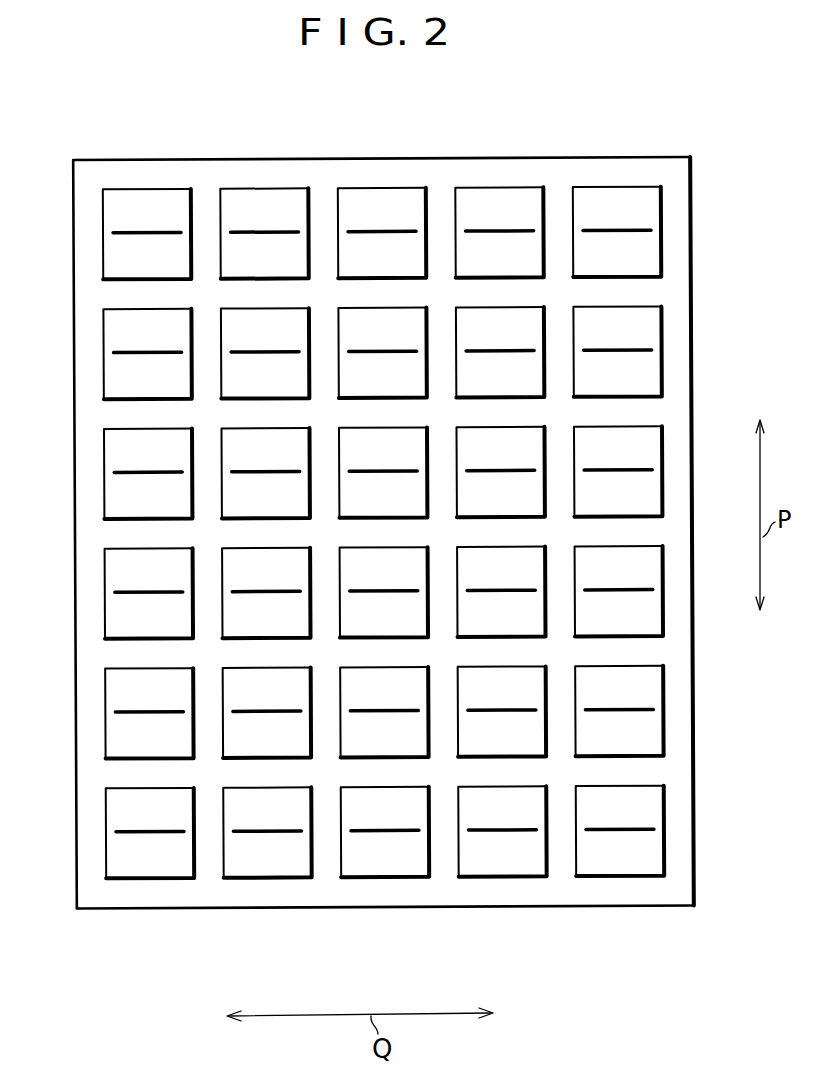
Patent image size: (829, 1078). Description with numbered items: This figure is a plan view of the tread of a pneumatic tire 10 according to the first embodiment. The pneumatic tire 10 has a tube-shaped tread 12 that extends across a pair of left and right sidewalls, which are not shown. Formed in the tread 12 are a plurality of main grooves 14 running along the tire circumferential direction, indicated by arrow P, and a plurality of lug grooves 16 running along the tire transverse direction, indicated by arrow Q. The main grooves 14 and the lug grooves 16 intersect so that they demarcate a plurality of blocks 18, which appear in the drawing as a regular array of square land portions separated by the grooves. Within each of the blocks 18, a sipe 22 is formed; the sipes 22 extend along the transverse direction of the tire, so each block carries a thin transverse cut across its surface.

The pneumatic tire 10 is at (542, 135).
The tread 12 is at (412, 170).
The main grooves 14 is at (205, 865).
The lug grooves 16 is at (108, 295).
The blocks 18 is at (650, 263).
The sipes 22 is at (622, 230).